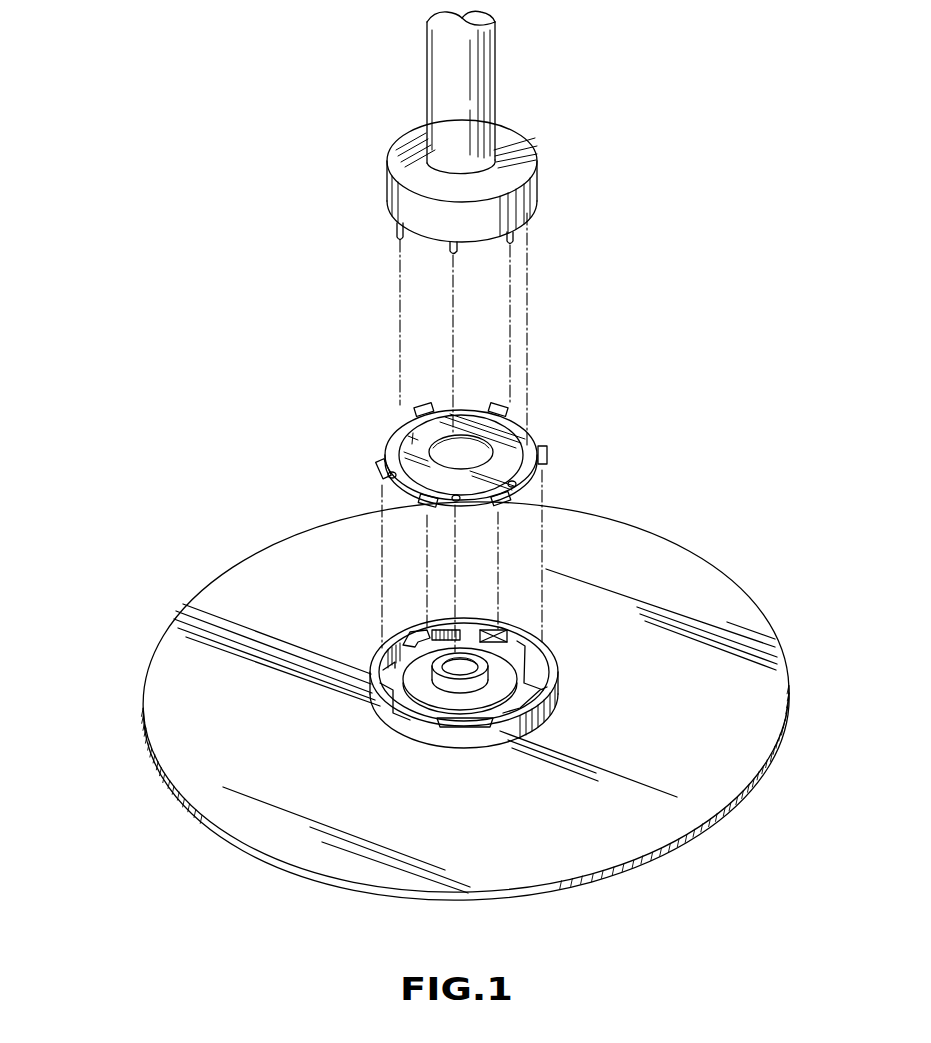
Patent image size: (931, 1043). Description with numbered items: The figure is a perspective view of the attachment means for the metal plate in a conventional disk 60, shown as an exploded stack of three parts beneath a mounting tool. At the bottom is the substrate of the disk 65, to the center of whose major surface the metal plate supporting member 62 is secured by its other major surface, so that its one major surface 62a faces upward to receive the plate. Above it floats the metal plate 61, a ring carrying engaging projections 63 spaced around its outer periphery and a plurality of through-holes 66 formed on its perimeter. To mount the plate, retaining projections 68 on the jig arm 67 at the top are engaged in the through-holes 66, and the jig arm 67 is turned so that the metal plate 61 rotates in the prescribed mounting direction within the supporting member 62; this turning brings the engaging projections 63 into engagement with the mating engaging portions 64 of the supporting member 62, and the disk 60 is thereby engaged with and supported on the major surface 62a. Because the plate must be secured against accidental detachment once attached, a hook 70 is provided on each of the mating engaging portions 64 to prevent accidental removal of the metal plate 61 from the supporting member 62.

The disk 60 is at (226, 516).
The metal plate 61 is at (512, 445).
The metal plate supporting member 62 is at (559, 674).
The major surface 62a is at (503, 722).
The engaging projections 63 is at (420, 404).
The mating engaging portions 64 is at (414, 627).
The disk substrate 65 is at (657, 550).
The through-holes 66 is at (388, 456).
The jig arm 67 is at (487, 74).
The retaining projections 68 is at (516, 243).
The hook 70 is at (497, 630).